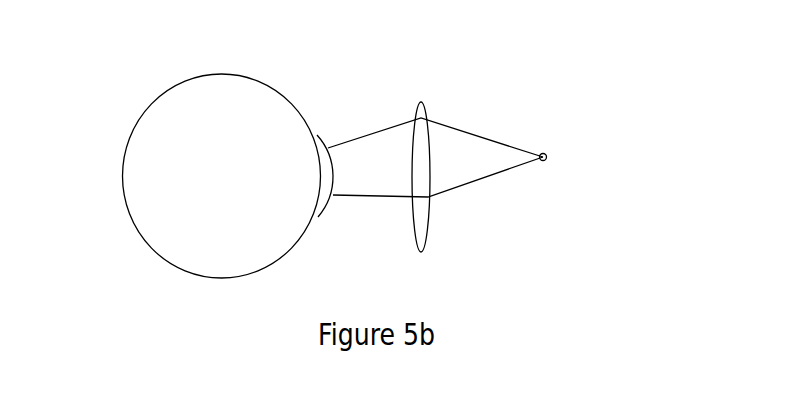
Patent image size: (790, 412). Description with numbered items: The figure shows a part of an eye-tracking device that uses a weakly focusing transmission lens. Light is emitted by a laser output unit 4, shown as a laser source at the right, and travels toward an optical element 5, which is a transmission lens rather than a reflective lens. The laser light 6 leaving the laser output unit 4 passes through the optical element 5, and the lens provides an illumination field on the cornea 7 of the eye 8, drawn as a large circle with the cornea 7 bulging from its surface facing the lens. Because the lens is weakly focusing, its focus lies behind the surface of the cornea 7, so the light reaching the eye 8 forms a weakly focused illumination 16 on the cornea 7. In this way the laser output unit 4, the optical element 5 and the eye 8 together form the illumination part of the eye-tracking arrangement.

The eye 8 is at (231, 178).
The cornea 7 is at (337, 163).
The laser beam 6 is at (487, 138).
The weakly focused illumination 16 is at (372, 178).
The optical element 5 is at (425, 213).
The laser output unit 4 is at (547, 154).